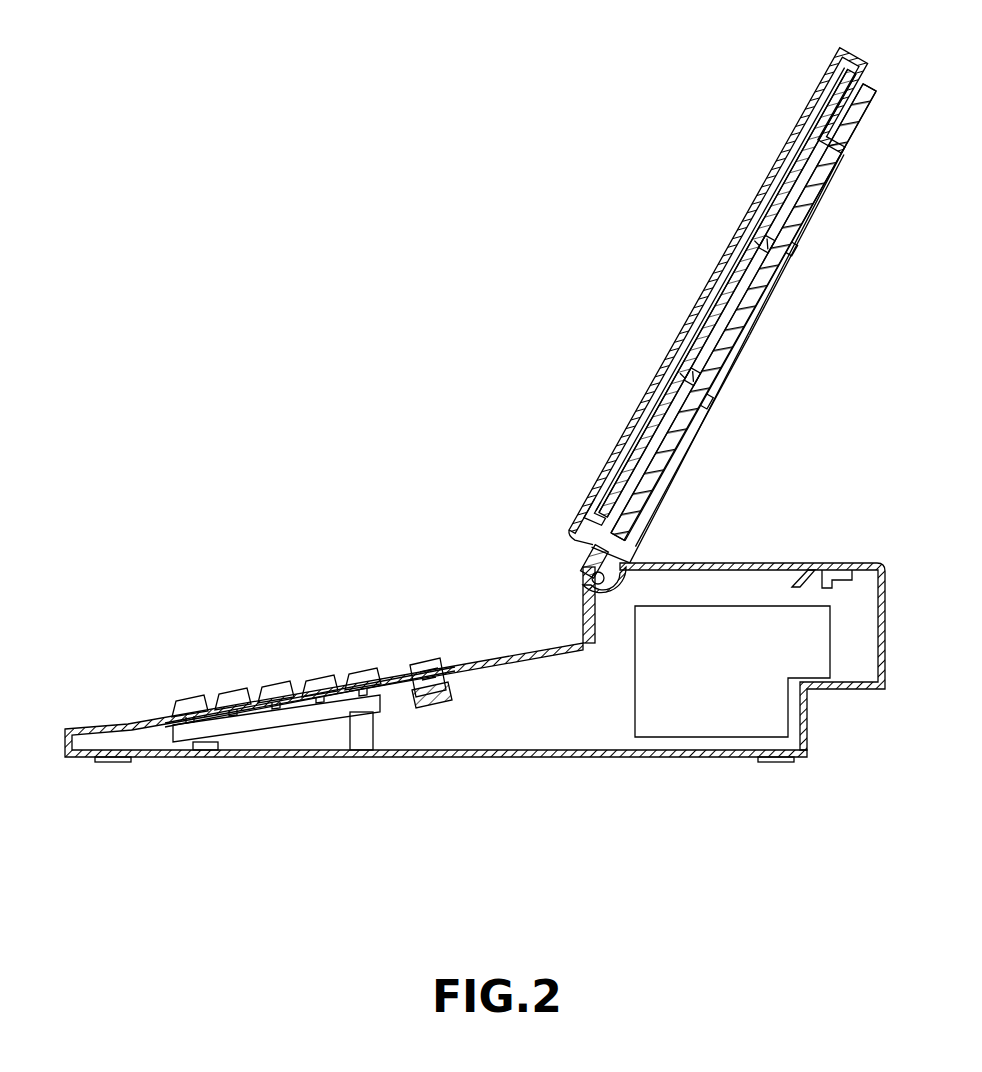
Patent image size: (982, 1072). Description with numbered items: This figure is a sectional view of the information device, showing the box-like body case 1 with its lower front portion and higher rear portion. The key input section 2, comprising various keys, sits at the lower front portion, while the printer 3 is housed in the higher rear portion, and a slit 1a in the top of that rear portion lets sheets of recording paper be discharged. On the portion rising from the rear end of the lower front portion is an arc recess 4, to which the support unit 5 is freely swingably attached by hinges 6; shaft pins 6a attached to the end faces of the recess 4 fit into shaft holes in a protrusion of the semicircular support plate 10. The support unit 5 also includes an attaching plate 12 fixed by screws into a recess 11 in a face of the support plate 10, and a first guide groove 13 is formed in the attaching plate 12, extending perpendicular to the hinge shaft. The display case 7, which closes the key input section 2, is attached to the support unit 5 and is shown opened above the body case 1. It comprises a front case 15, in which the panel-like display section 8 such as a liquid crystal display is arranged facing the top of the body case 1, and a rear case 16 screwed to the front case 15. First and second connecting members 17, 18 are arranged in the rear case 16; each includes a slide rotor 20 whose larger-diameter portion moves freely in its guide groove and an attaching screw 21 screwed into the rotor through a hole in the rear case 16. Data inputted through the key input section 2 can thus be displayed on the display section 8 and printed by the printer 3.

The body case 1 is at (516, 766).
The slit 1a is at (826, 563).
The key input section 2 is at (280, 688).
The printer 3 is at (703, 741).
The arc recess 4 is at (630, 582).
The support unit 5 is at (758, 368).
The hinges 6 is at (570, 586).
The shaft pins 6a is at (588, 577).
The display case 7 is at (818, 72).
The display section 8 is at (706, 306).
The support plate 10 is at (703, 427).
The recess 11 is at (620, 480).
The attaching plate 12 is at (665, 465).
The first guide groove 13 is at (822, 192).
The front case 15 is at (575, 515).
The rear case 16 is at (640, 445).
The first connecting member 17 is at (760, 240).
The second connecting member 18 is at (690, 375).
The slide rotor 20 is at (797, 250).
The attaching screw 21 is at (765, 243).